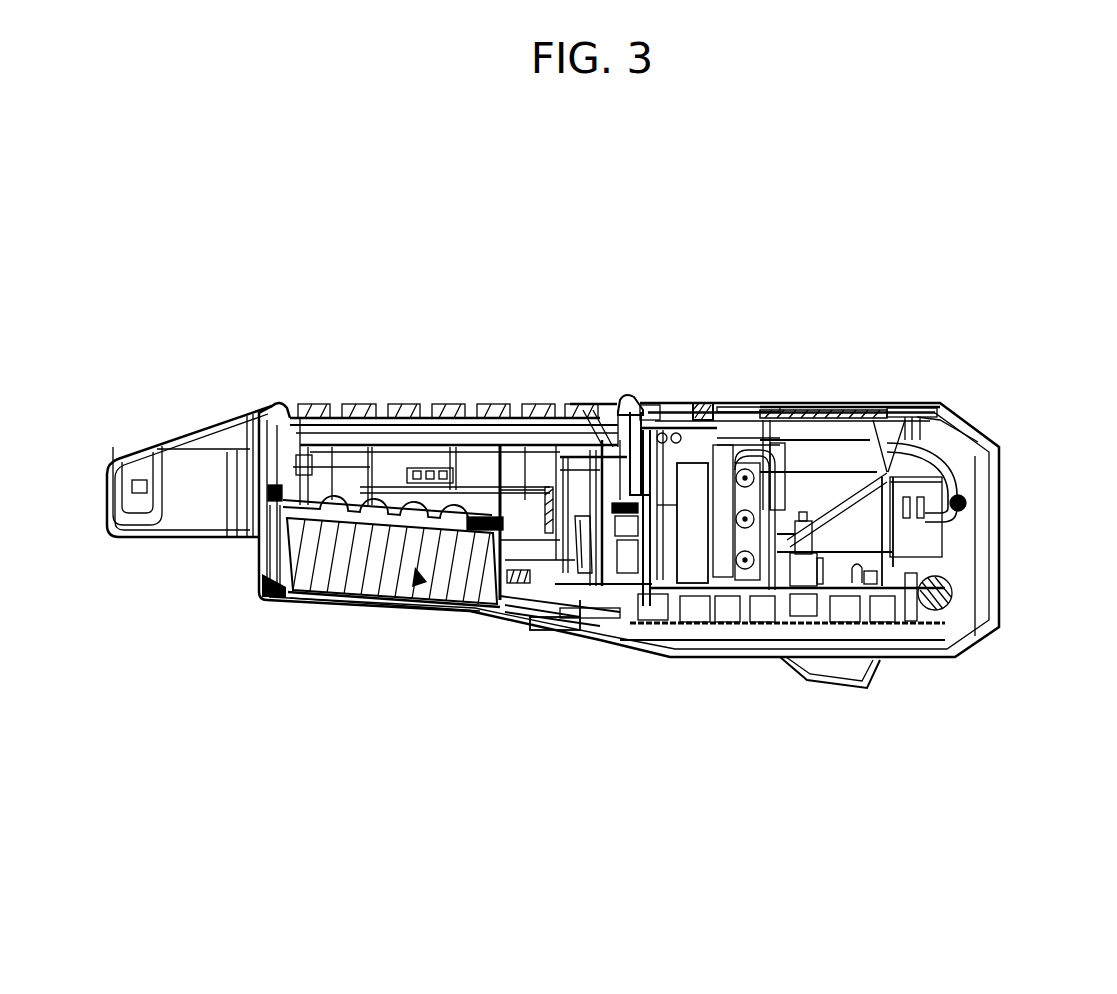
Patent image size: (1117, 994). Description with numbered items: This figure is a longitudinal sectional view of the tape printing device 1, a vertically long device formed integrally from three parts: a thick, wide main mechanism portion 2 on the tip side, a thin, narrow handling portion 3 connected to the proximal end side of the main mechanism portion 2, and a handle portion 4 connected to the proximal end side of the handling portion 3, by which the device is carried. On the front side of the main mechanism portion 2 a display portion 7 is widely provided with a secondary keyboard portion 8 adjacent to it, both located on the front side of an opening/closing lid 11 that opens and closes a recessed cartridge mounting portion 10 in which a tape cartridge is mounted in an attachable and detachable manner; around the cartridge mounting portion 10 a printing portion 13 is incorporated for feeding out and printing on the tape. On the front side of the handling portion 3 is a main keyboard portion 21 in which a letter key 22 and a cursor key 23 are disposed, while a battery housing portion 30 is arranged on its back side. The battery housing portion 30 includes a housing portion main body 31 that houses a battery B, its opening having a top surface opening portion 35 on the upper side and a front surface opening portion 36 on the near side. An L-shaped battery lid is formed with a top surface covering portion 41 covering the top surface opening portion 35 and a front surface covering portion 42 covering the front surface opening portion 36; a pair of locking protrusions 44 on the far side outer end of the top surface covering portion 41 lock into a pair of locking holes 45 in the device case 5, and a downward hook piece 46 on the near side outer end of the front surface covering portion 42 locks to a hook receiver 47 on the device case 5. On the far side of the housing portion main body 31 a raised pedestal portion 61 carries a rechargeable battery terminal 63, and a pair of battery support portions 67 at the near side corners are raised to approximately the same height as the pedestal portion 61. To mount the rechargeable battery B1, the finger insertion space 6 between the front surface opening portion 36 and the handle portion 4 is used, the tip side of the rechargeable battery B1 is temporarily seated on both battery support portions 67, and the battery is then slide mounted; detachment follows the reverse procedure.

The tape printing device 1 is at (620, 186).
The main mechanism portion 2 is at (805, 238).
The handling portion 3 is at (500, 262).
The handle portion 4 is at (140, 376).
The device case 5 is at (563, 625).
The finger insertion space 6 is at (183, 512).
The display portion 7 is at (880, 405).
The secondary keyboard portion 8 is at (690, 403).
The cartridge mounting portion 10 is at (857, 527).
The opening/closing lid 11 is at (630, 398).
The printing portion 13 is at (752, 660).
The main keyboard portion 21 is at (478, 300).
The letter key 22 is at (435, 407).
The cursor key 23 is at (372, 407).
The battery housing portion 30 is at (283, 747).
The housing portion main body 31 is at (418, 613).
The top surface opening portion 35 is at (360, 612).
The front surface opening portion 36 is at (270, 595).
The top surface covering portion 41 is at (391, 627).
The front surface covering portion 42 is at (238, 621).
The locking protrusions 44 is at (550, 634).
The locking holes 45 is at (536, 636).
The hook piece 46 is at (257, 425).
The hook receiver 47 is at (262, 518).
The pedestal portion 61 is at (508, 490).
The rechargeable battery terminal 63 is at (521, 437).
The battery support portions 67 is at (305, 460).
The rechargeable battery B1 is at (458, 582).
The battery B is at (391, 638).